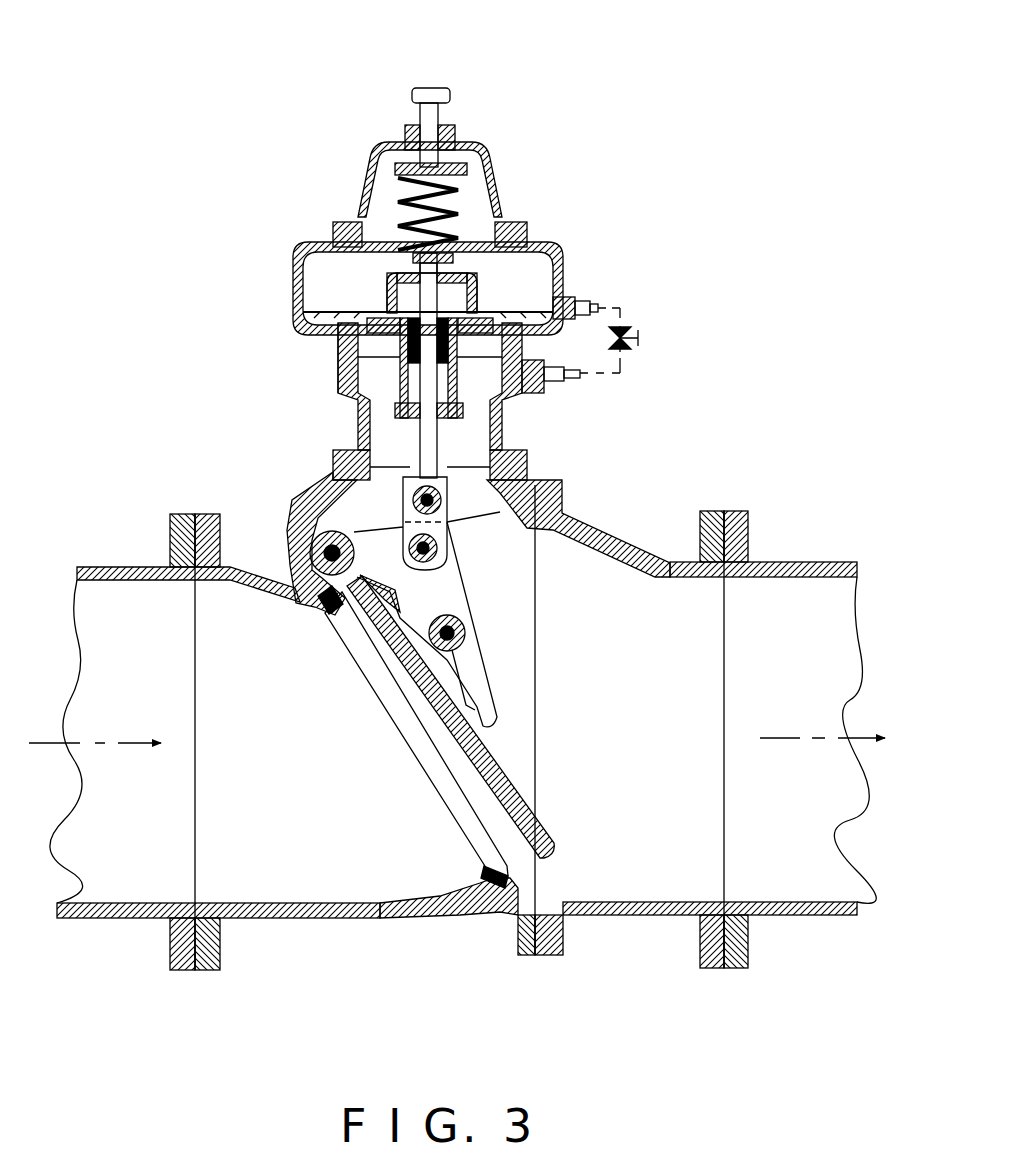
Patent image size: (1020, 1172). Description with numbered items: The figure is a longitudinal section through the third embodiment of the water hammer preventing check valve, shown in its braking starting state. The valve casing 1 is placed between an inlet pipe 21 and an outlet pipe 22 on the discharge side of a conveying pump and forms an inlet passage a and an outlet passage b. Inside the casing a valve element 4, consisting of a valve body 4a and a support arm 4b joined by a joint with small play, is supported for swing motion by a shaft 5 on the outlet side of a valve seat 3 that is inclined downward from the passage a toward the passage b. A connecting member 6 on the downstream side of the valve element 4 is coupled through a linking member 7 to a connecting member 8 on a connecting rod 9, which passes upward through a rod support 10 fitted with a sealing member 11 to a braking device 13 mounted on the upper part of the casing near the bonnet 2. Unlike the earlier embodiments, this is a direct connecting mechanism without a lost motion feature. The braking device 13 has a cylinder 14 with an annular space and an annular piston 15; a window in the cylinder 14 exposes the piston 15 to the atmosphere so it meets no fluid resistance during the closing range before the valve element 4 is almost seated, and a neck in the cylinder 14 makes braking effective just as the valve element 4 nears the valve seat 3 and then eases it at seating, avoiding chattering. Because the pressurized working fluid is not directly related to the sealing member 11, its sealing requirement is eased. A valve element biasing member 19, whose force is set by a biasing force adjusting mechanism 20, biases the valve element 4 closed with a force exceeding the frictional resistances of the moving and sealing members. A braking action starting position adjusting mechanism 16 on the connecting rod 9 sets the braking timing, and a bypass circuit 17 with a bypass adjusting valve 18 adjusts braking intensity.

The valve casing 1 is at (290, 520).
The bonnet 2 is at (333, 455).
The valve seat 3 is at (497, 895).
The valve element 4 is at (442, 580).
The valve body 4a is at (455, 650).
The support arm 4b is at (487, 567).
The shaft 5 is at (312, 553).
The connecting member 6 is at (440, 538).
The linking member 7 is at (440, 497).
The connecting member 8 is at (440, 473).
The connecting rod 9 is at (293, 247).
The rod support 10 is at (340, 357).
The sealing member 11 is at (335, 445).
The braking device 13 is at (380, 262).
The cylinder 14 is at (370, 330).
The piston 15 is at (387, 320).
The braking action starting position adjusting mechanism 16 is at (457, 253).
The bypass circuit 17 is at (620, 307).
The bypass adjusting valve 18 is at (643, 337).
The valve element biasing member 19 is at (460, 210).
The biasing force adjusting mechanism 20 is at (430, 120).
The inlet pipe 21 is at (157, 908).
The outlet pipe 22 is at (765, 920).
The inlet passage a is at (267, 733).
The outlet passage b is at (645, 743).